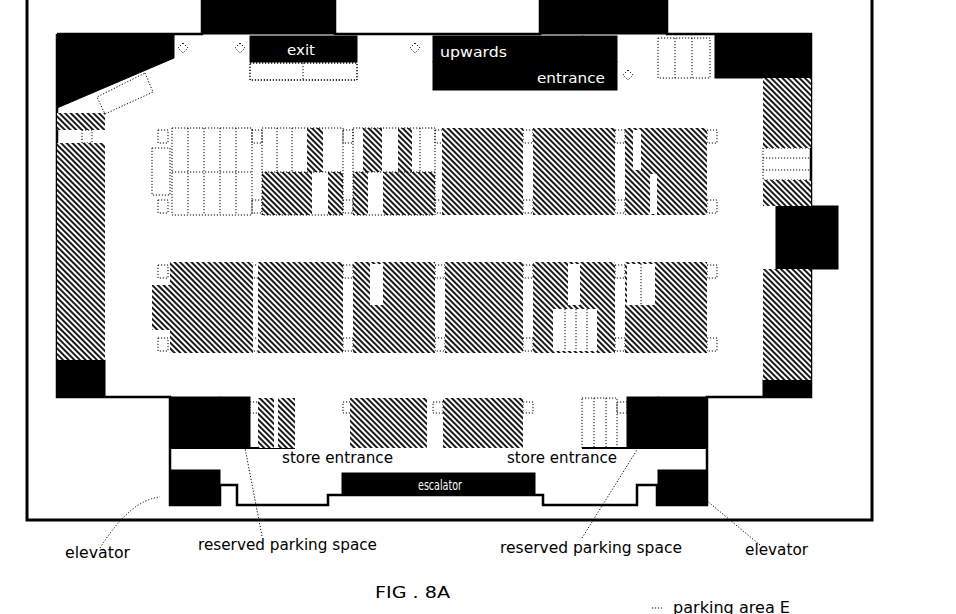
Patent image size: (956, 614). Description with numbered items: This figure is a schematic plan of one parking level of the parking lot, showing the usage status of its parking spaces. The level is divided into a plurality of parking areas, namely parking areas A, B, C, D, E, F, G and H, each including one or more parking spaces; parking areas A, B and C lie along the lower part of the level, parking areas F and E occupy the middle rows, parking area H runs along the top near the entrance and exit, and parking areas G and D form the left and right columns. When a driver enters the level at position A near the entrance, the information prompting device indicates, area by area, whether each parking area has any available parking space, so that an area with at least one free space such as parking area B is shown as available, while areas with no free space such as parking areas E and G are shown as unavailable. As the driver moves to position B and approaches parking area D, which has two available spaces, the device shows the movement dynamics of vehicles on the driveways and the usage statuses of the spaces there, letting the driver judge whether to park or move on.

The parking area A / position A is at (254, 324).
The parking area B / position B is at (438, 324).
The parking area C is at (620, 324).
The parking area D is at (775, 229).
The parking area E is at (574, 187).
The parking area F is at (303, 187).
The parking area G is at (99, 236).
The parking area H is at (344, 87).